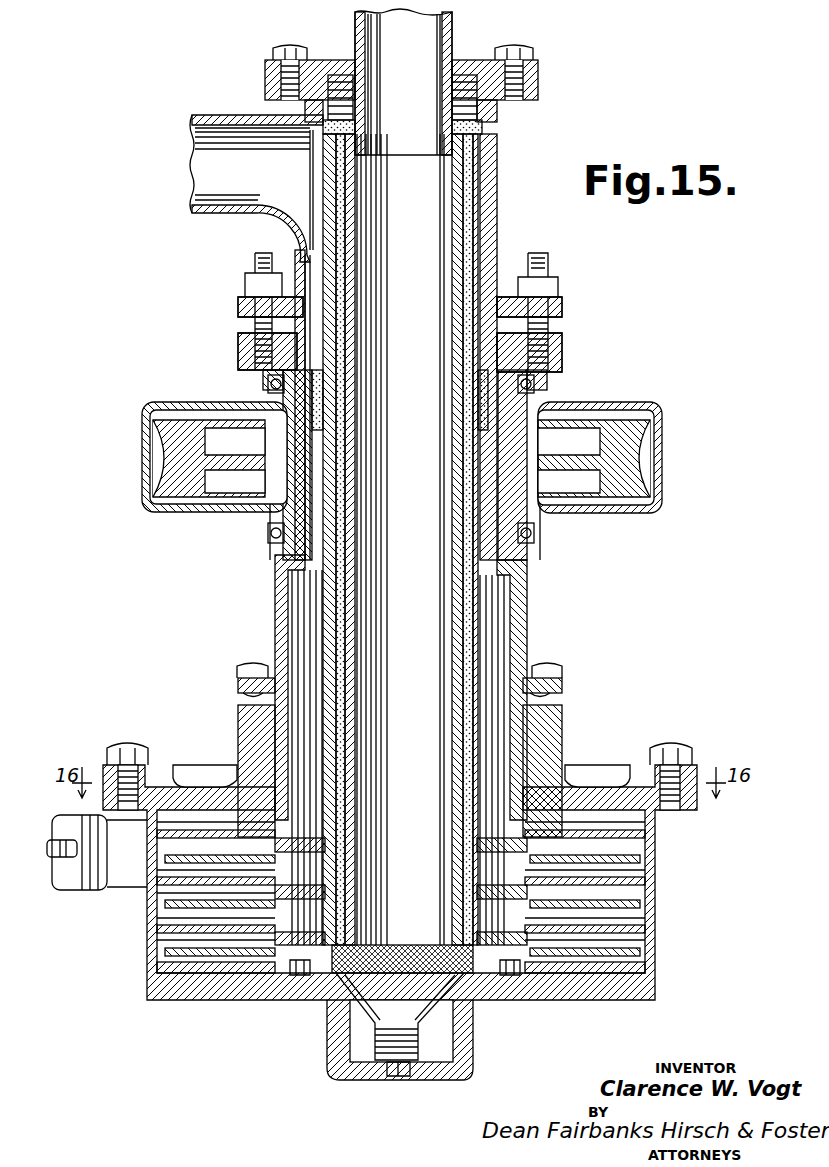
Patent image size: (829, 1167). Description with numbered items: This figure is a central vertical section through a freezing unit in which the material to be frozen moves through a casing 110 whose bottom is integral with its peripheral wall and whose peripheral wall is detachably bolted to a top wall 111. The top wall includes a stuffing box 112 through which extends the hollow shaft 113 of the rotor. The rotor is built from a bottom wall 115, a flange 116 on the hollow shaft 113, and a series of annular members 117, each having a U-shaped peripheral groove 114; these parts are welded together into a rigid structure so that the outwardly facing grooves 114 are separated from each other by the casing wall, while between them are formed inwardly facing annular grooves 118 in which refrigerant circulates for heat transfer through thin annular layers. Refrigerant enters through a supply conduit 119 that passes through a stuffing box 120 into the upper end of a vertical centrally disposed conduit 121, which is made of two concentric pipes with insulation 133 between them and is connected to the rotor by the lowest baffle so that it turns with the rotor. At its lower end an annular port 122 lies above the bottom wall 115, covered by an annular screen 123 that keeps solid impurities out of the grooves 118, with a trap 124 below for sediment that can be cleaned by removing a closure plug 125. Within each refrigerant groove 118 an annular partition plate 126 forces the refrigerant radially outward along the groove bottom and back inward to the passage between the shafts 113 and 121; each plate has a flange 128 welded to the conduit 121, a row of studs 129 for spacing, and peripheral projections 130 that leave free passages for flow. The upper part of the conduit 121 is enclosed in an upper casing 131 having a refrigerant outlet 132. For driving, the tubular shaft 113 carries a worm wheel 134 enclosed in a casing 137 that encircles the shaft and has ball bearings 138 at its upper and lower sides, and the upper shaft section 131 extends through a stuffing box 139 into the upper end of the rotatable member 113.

The casing 110 is at (150, 911).
The top wall 111 is at (183, 793).
The stuffing box 112 is at (236, 692).
The hollow shaft 113 is at (279, 606).
The peripheral grooves 114 is at (640, 827).
The bottom wall 115 is at (606, 970).
The flange 116 is at (211, 830).
The annular members 117 is at (173, 871).
The annular grooves 118 is at (640, 903).
The supply conduit 119 is at (452, 31).
The stuffing box 120 is at (482, 126).
The vertical centrally disposed conduit 121 is at (465, 199).
The annular port 122 is at (323, 975).
The annular screen 123 is at (470, 963).
The trap 124 is at (415, 1008).
The closure plug 125 is at (395, 1066).
The annular partition plate 126 is at (175, 945).
The flange 128 is at (480, 847).
The studs 129 is at (300, 832).
The radially extending projections 130 is at (160, 895).
The upper casing 131 is at (497, 230).
The refrigerant outlet 132 is at (210, 186).
The insulation 133 is at (462, 521).
The worm wheel 134 is at (165, 484).
The casing 137 is at (143, 440).
The ball bearings 138 is at (268, 384).
The stuffing box 139 is at (310, 395).